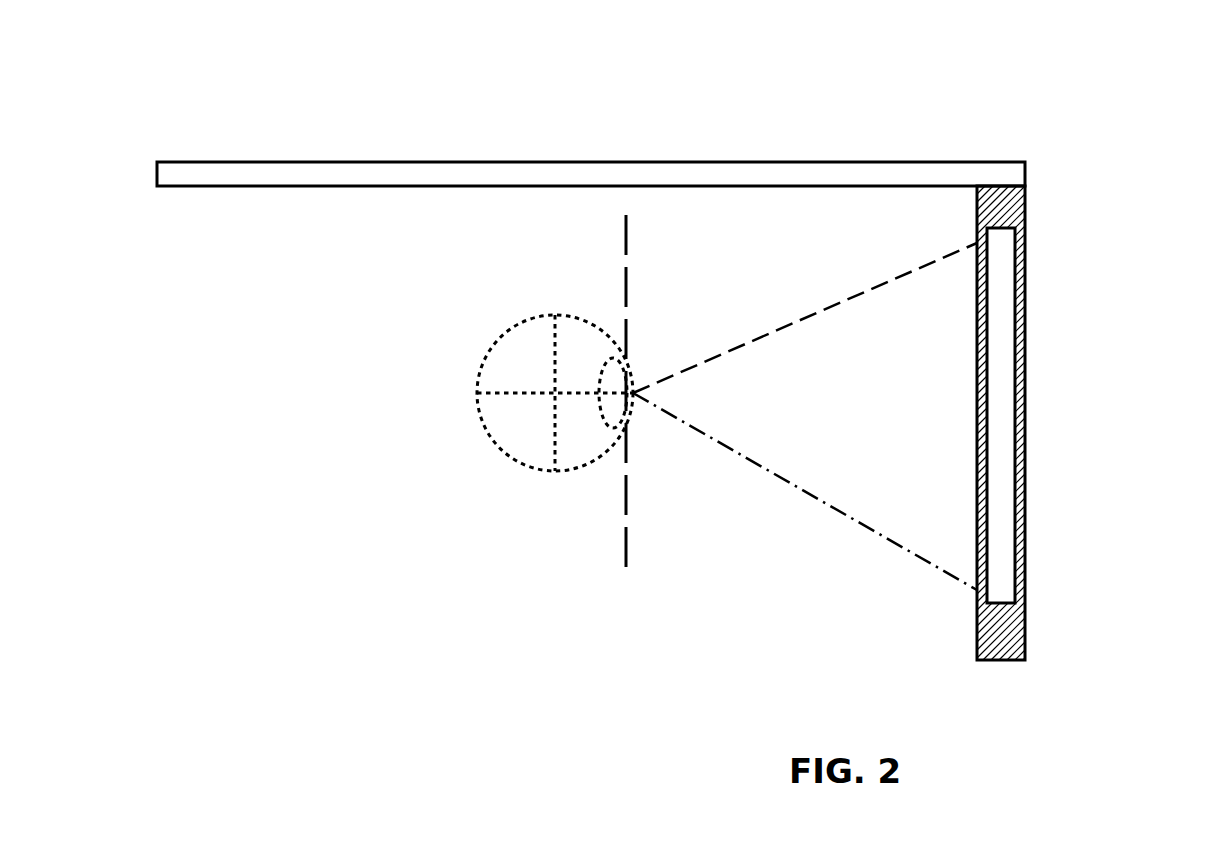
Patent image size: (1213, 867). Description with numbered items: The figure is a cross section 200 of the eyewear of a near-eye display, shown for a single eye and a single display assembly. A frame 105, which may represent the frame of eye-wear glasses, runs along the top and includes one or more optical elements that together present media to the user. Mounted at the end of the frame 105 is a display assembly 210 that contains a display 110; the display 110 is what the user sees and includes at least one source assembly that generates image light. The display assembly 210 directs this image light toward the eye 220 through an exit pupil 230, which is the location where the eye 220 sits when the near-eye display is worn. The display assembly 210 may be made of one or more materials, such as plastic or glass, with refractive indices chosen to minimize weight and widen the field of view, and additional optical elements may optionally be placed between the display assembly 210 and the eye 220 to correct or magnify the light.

The cross section 200 is at (334, 62).
The frame 105 is at (883, 140).
The display assembly 210 is at (997, 303).
The display 110 is at (1047, 537).
The eye 220 is at (502, 311).
The exit pupil 230 is at (609, 506).